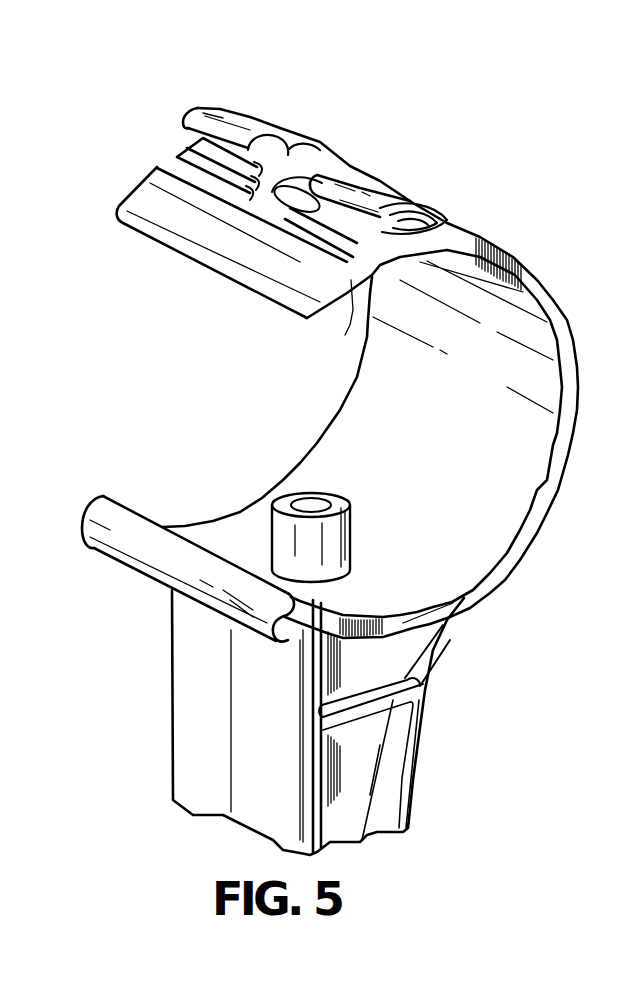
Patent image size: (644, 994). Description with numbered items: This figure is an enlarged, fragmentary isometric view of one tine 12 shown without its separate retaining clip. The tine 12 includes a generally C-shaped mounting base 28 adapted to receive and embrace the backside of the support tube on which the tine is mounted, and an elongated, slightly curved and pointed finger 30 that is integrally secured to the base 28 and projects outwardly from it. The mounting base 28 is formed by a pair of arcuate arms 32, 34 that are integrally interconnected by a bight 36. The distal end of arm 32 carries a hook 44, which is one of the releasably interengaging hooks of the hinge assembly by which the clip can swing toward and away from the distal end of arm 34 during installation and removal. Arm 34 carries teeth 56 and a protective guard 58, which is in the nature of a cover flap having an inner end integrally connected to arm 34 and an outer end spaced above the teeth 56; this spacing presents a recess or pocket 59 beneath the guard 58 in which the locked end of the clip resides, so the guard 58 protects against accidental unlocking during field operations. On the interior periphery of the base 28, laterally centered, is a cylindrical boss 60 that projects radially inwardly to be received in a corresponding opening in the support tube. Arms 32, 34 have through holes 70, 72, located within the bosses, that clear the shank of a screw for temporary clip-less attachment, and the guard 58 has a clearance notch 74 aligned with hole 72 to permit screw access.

The tine 12 is at (548, 198).
The mounting base 28 is at (535, 530).
The finger 30 is at (198, 752).
The arcuate arm 32 is at (380, 623).
The arcuate arm 34 is at (482, 243).
The bight 36 is at (531, 509).
The hook 44 is at (285, 643).
The teeth 56 is at (353, 314).
The protective guard 58 is at (370, 188).
The pocket 59 is at (190, 137).
The boss 60 is at (346, 545).
The through hole 70 is at (313, 505).
The through hole 72 is at (300, 197).
The notch 74 is at (313, 143).